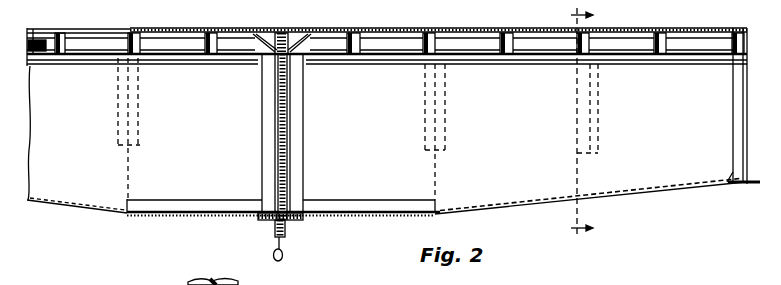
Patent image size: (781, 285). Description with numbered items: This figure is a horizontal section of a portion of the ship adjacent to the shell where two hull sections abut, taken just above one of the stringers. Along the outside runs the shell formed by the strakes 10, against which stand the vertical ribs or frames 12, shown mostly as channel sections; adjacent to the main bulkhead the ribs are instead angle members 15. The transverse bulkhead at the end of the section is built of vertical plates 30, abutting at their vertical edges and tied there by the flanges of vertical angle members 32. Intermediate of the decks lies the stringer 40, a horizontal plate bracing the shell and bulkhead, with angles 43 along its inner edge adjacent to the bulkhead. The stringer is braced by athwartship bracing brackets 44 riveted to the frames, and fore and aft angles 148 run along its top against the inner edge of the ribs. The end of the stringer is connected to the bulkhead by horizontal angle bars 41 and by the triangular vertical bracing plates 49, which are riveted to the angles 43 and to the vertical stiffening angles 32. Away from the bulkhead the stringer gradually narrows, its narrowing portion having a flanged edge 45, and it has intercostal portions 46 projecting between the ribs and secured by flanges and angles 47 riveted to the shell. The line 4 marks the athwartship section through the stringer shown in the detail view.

The section line 4— 4 is at (587, 122).
The strakes 10 is at (452, 31).
The vertical ribs or frames 12 is at (222, 27).
The angle members 15 is at (270, 31).
The vertical plates 30 is at (290, 110).
The vertical angle members 32 is at (260, 220).
The stringers 40 is at (370, 152).
The horizontal angle bars 41 is at (262, 131).
The angles 43 is at (337, 199).
The athwartship bracing brackets 44 is at (599, 133).
The flanged edge 45 is at (590, 197).
The intercostal portions 46 is at (183, 48).
The angles 47 is at (484, 42).
The vertical bracing plates 49 is at (360, 216).
The fore and aft angles 148 is at (240, 63).